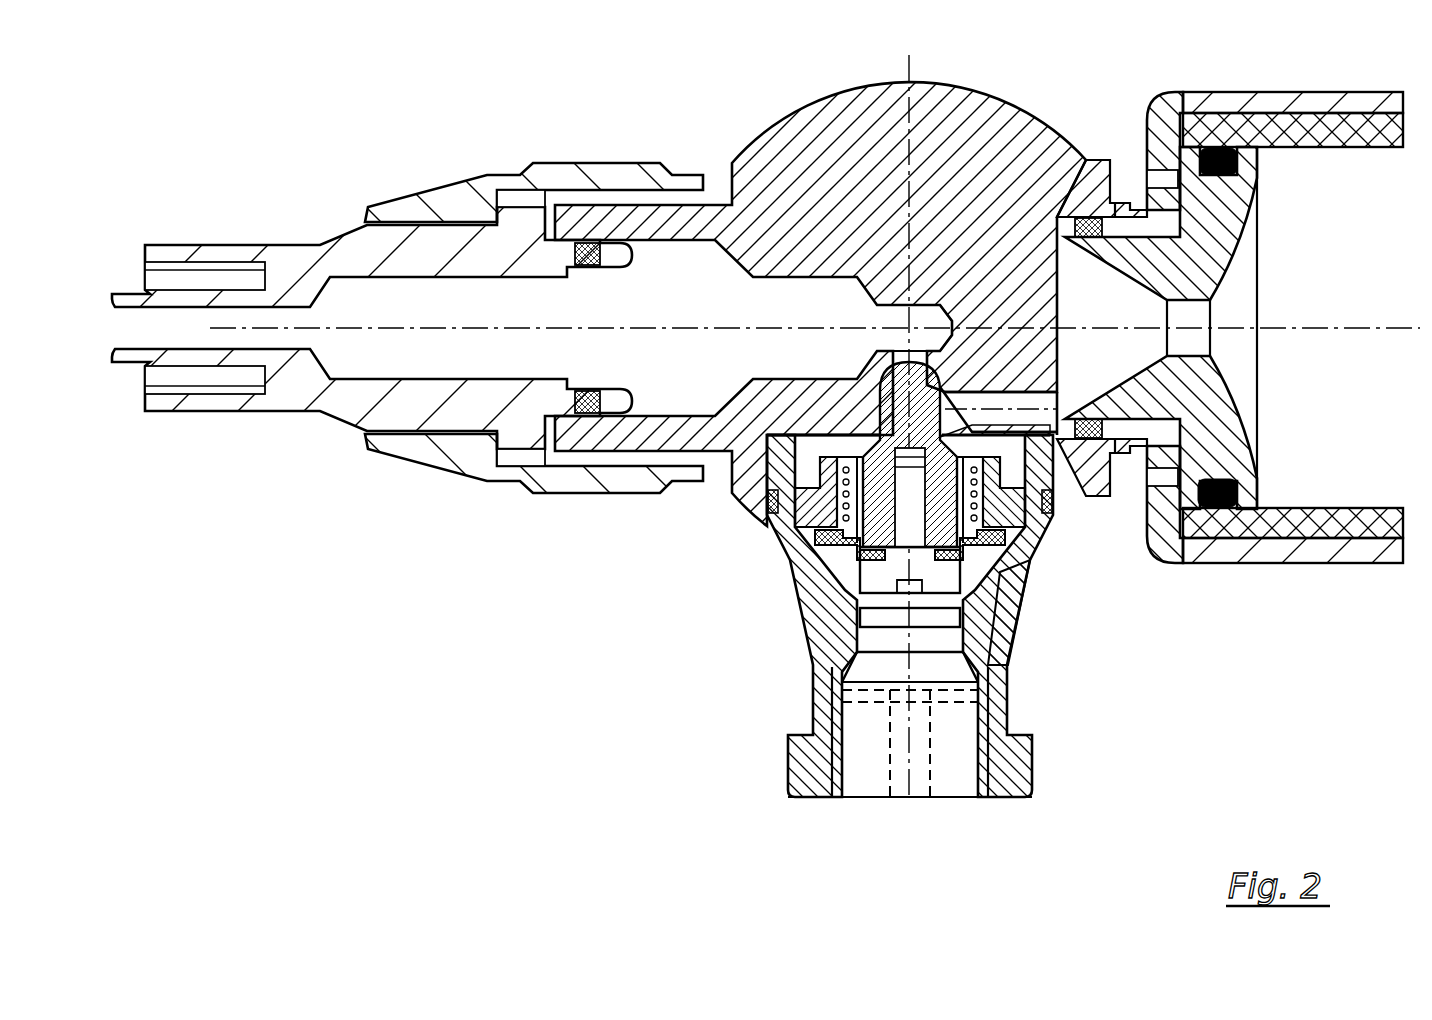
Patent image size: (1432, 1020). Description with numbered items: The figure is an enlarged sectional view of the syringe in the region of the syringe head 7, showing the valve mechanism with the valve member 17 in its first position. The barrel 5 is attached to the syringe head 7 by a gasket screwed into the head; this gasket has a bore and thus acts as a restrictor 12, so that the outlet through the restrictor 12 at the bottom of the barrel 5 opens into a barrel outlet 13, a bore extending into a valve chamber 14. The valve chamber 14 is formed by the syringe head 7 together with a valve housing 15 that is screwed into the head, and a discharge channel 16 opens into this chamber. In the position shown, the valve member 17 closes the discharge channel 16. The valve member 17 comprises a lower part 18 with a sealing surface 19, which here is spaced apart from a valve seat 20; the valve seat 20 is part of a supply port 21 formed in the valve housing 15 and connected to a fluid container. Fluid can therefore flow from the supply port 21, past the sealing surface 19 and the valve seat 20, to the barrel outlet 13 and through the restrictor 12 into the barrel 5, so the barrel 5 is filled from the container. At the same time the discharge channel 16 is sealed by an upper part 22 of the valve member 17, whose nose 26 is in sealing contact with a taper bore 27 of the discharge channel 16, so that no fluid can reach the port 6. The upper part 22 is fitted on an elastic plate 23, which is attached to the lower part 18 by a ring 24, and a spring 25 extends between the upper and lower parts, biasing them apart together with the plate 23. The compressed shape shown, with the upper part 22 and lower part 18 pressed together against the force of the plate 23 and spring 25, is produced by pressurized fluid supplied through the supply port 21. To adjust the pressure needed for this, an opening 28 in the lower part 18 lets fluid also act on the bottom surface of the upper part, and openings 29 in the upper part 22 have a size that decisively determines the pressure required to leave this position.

The barrel 5 is at (1306, 556).
The port 6 is at (210, 410).
The syringe head 7 is at (798, 98).
The restrictor 12 is at (1140, 222).
The barrel outlet 13 is at (1035, 400).
The valve chamber 14 is at (765, 462).
The valve housing 15 is at (795, 660).
The discharge channel 16 is at (892, 341).
The valve member 17 is at (800, 580).
The lower part 18 is at (985, 578).
The sealing surface 19 is at (840, 612).
The valve seat 20 is at (1012, 665).
The supply port 21 is at (860, 752).
The upper part 22 is at (778, 502).
The plate 23 is at (1005, 540).
The ring 24 is at (1015, 505).
The spring 25 is at (815, 538).
The nose 26 is at (880, 405).
The taper bore 27 is at (940, 378).
The opening 28 is at (862, 632).
The openings 29 is at (840, 432).